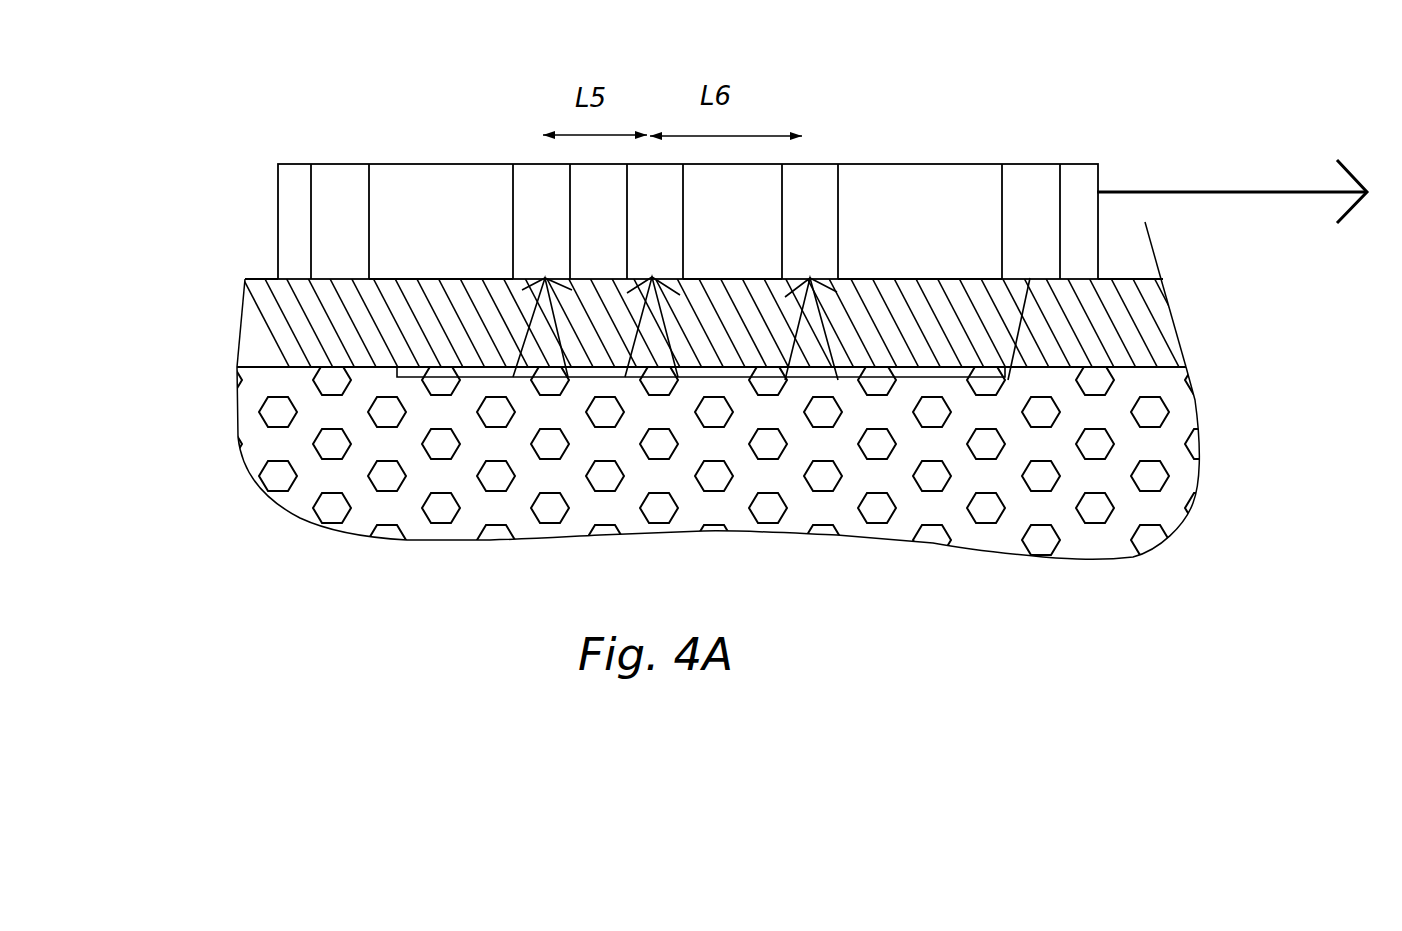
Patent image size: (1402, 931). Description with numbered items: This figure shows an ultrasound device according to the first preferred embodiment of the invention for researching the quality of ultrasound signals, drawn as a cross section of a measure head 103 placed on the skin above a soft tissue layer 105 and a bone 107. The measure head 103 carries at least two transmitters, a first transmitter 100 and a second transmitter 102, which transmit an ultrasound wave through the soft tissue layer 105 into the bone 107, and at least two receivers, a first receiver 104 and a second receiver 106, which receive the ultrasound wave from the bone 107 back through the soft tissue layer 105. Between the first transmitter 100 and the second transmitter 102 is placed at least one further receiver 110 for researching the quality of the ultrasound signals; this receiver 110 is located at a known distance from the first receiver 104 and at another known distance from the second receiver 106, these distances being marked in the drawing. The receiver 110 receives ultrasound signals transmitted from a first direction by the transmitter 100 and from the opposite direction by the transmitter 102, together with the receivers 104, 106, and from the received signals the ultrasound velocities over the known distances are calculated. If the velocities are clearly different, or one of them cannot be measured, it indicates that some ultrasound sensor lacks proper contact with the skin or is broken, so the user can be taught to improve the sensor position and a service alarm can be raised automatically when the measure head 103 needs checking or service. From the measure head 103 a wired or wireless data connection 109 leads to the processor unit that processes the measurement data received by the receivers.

The first transmitter 100 is at (340, 168).
The second transmitter 102 is at (1028, 163).
The measure head 103 is at (418, 163).
The first receiver 104 is at (513, 215).
The soft tissue layer 105 is at (263, 333).
The second receiver 106 is at (840, 208).
The bone 107 is at (262, 445).
The data connection 109 is at (1247, 190).
The receiver for researching the quality of ultrasound signals 110 is at (685, 192).